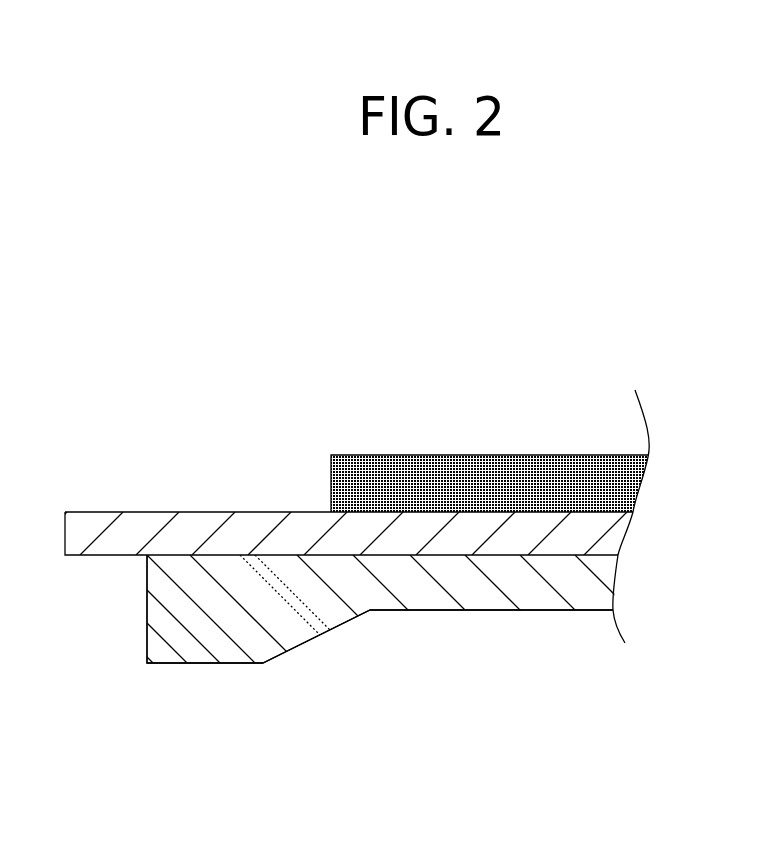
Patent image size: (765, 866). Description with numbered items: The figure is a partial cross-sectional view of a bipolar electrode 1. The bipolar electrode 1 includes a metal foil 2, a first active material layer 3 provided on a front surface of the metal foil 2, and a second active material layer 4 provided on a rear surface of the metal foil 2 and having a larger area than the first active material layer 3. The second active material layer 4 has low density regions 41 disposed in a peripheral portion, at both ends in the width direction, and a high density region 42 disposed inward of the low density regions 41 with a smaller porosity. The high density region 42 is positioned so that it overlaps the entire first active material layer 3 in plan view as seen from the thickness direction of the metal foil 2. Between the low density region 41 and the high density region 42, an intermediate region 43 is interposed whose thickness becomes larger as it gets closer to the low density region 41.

The bipolar electrode 1 is at (600, 372).
The metal foil 2 is at (178, 540).
The first active material layer 3 is at (508, 488).
The second active material layer 4 is at (443, 588).
The low density region 41 is at (203, 650).
The high density region 42 is at (573, 588).
The intermediate region 43 is at (313, 611).